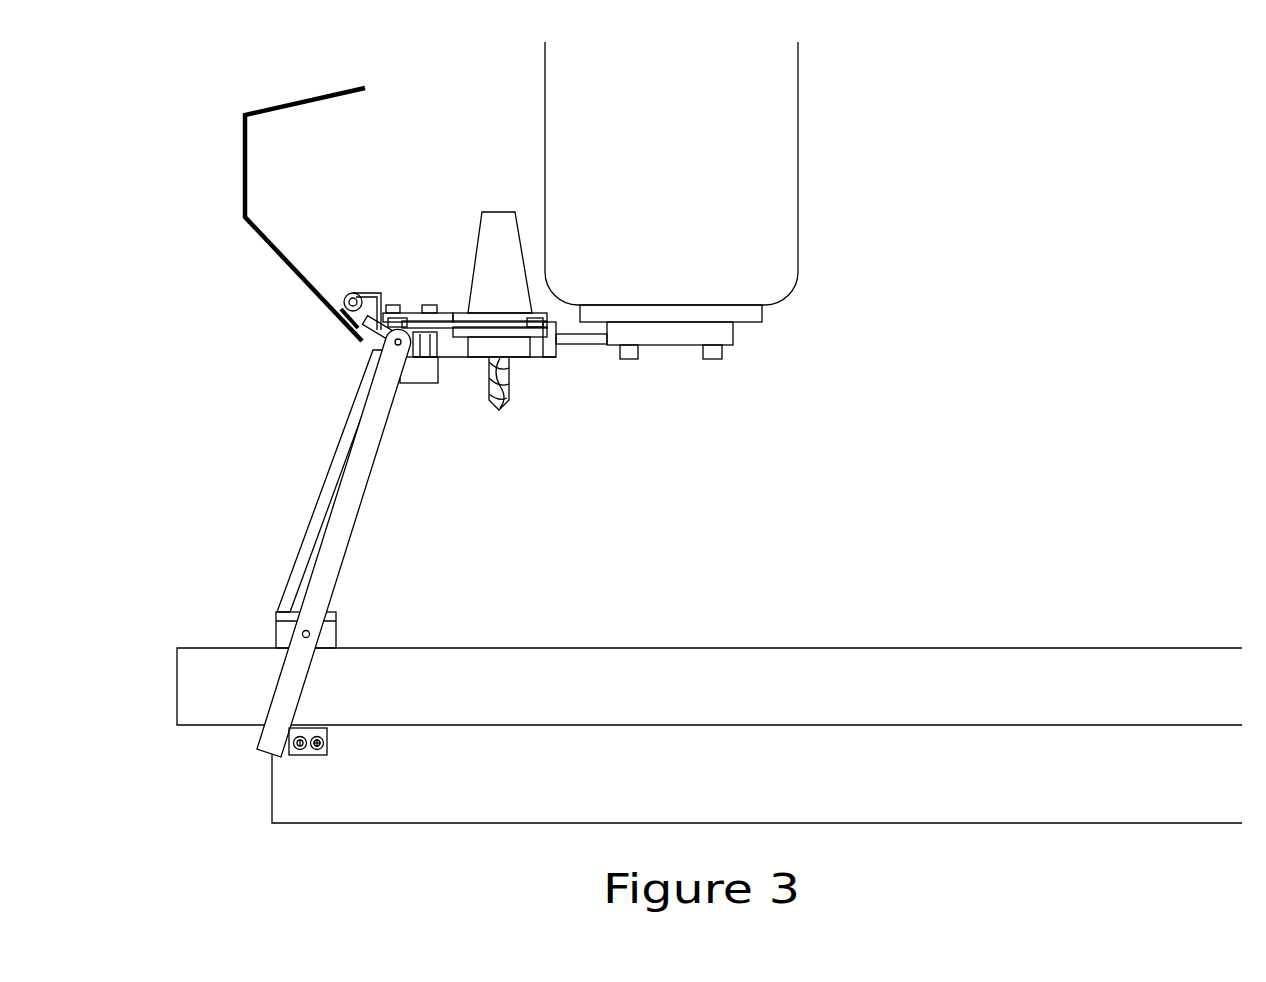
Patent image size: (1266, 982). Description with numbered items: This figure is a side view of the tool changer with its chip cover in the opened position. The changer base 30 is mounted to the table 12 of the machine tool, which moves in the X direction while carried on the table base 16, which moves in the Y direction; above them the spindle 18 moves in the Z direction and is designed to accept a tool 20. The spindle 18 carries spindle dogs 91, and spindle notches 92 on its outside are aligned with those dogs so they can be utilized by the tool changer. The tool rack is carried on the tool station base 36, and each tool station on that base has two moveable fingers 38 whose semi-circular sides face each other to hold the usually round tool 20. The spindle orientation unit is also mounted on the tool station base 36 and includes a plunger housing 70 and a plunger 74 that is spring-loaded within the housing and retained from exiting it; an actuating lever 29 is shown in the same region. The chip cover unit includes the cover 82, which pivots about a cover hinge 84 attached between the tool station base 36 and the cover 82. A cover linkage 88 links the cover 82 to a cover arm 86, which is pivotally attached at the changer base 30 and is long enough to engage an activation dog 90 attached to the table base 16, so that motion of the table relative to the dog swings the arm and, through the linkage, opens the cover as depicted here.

The table 12 is at (528, 700).
The table base 16 is at (523, 787).
The spindle 18 is at (679, 192).
The tool 20 is at (516, 287).
The actuating lever 29 is at (298, 570).
The changer base 30 is at (272, 630).
The tool station base 36 is at (412, 377).
The moveable fingers 38 is at (447, 320).
The plunger housing 70 is at (550, 350).
The plunger 74 is at (581, 339).
The cover 82 is at (292, 107).
The cover hinge 84 is at (365, 291).
The cover arm 86 is at (338, 539).
The cover linkage 88 is at (375, 337).
The activation dog 90 is at (308, 735).
The spindle dogs 91 is at (711, 354).
The spindle notches 92 is at (728, 340).